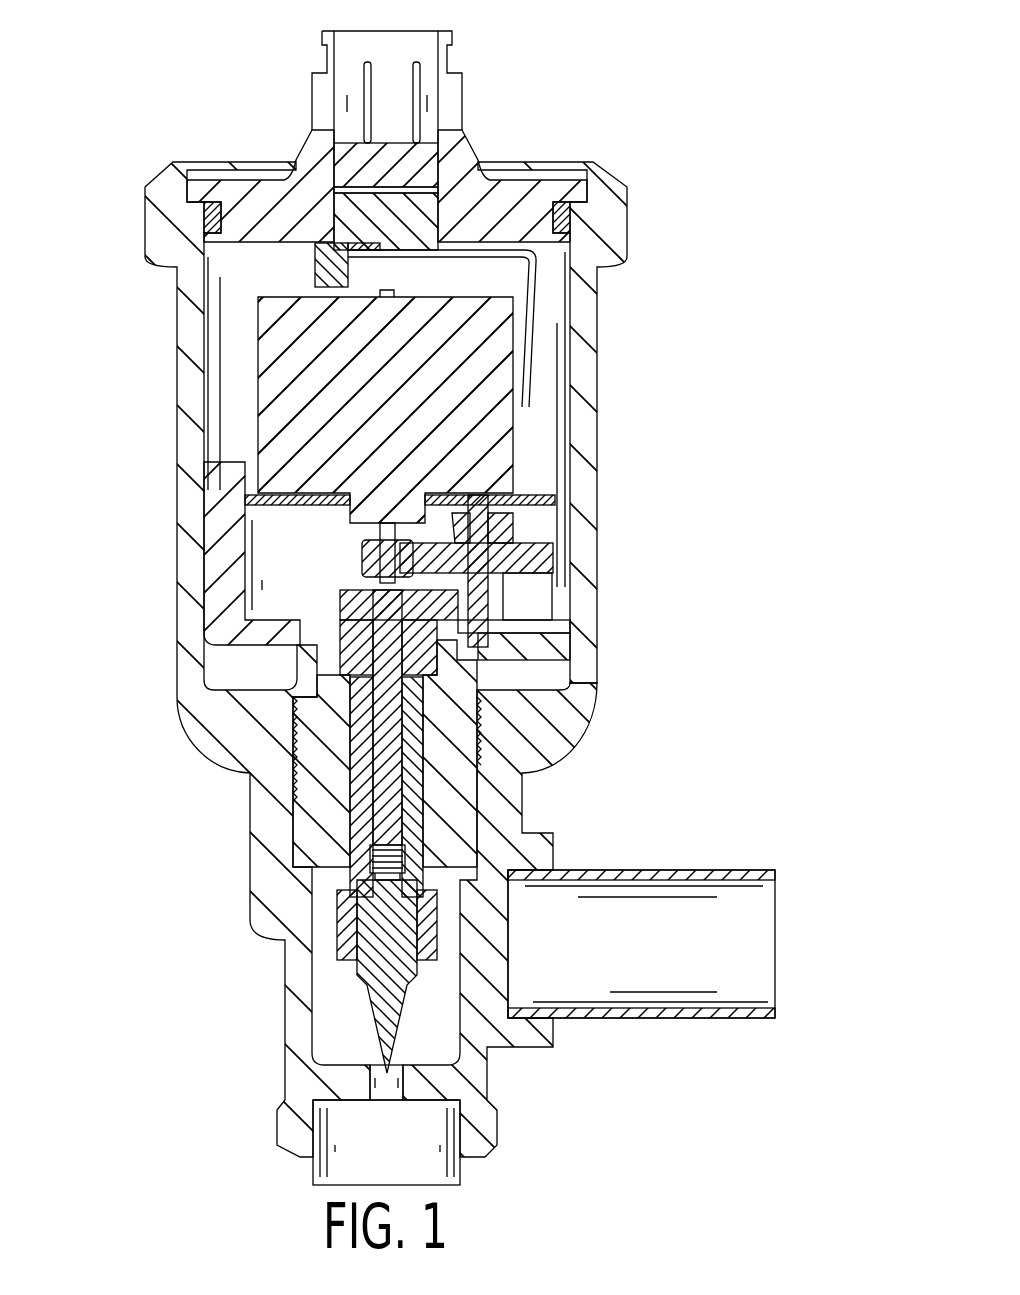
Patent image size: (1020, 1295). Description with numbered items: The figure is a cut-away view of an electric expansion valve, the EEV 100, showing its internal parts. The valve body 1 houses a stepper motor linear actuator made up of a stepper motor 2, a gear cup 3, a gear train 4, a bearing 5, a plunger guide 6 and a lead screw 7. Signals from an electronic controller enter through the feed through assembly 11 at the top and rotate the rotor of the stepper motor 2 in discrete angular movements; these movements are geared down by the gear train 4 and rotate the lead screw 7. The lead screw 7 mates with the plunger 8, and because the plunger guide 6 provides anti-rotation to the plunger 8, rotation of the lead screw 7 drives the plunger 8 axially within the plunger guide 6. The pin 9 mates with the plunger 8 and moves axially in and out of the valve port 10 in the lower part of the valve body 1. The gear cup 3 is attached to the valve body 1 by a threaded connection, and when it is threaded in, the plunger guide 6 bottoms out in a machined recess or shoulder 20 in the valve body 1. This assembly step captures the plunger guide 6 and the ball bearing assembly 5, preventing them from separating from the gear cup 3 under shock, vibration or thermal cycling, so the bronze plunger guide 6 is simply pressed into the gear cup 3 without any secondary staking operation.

The EEV 100 is at (419, 608).
The valve body 1 is at (185, 727).
The stepper motor 2 is at (255, 392).
The gear cup 3 is at (200, 583).
The gear train 4 is at (513, 557).
The bearing 5 is at (440, 657).
The plunger guide 6 is at (478, 793).
The lead screw 7 is at (367, 697).
The plunger 8 is at (347, 880).
The pin 9 is at (367, 1017).
The valve port 10 is at (407, 1082).
The feed through assembly 11 is at (485, 145).
The shoulder 20 is at (480, 878).